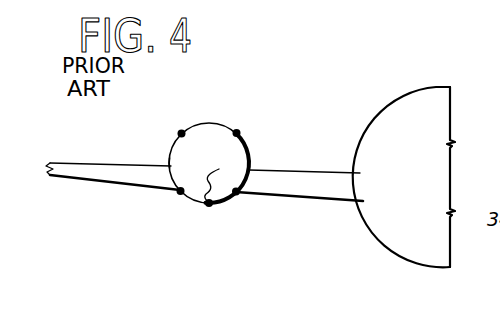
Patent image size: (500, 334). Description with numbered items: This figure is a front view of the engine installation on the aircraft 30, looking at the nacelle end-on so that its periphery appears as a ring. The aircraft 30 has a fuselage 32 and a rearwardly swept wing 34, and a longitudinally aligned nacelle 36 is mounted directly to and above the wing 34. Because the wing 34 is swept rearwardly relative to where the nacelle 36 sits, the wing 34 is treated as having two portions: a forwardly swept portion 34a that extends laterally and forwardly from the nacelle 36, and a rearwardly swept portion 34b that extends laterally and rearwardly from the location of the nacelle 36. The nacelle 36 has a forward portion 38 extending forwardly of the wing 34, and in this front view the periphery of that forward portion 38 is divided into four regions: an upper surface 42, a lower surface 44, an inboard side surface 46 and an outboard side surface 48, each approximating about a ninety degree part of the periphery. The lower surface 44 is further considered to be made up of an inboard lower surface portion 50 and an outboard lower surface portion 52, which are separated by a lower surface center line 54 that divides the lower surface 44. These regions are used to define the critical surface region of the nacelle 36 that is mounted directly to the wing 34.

The aircraft 30 is at (305, 82).
The fuselage 32 is at (428, 102).
The rearwardly swept wing 34 is at (300, 189).
The forwardly swept portion 34a is at (310, 174).
The rearwardly swept portion 34b is at (109, 174).
The nacelle 36 is at (231, 119).
The forward portion 38 is at (201, 134).
The upper surface 42 is at (188, 123).
The lower surface 44 is at (207, 204).
The inboard side surface 46 is at (251, 158).
The outboard side surface 48 is at (165, 157).
The inboard lower surface portion 50 is at (233, 198).
The outboard lower surface portion 52 is at (183, 197).
The lower surface center line 54 is at (220, 177).